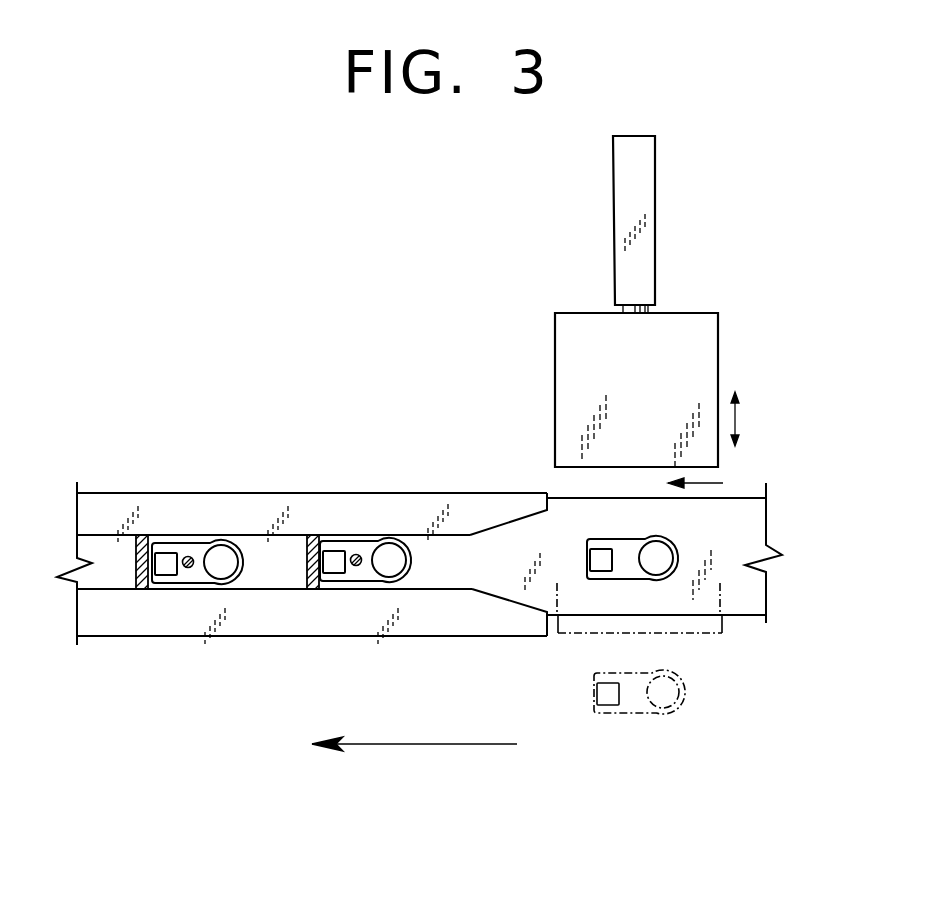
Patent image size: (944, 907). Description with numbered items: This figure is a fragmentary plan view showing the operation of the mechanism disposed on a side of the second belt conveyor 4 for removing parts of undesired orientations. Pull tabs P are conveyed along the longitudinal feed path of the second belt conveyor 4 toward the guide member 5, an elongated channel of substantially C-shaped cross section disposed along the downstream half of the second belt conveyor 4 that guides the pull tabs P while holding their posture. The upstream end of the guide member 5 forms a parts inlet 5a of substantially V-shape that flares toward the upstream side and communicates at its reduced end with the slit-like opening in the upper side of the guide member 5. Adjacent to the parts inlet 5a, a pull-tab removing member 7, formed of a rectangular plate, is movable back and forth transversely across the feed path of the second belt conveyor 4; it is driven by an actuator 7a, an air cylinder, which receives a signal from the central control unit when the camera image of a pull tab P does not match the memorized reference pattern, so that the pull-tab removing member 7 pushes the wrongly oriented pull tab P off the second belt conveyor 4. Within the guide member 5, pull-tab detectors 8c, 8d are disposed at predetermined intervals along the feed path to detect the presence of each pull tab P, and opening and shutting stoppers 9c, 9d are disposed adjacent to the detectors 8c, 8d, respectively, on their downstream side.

The second belt conveyor 4 is at (742, 594).
The guide member 5 is at (323, 613).
The parts inlet 5a is at (490, 590).
The pull-tab removing member 7 is at (722, 389).
The actuator 7a is at (643, 231).
The third pull-tab detector 8c is at (185, 556).
The fourth pull-tab detector 8d is at (356, 554).
The third opening and shutting stopper 9c is at (135, 553).
The fourth opening and shutting stopper 9d is at (307, 552).
The pull tab P is at (203, 586).